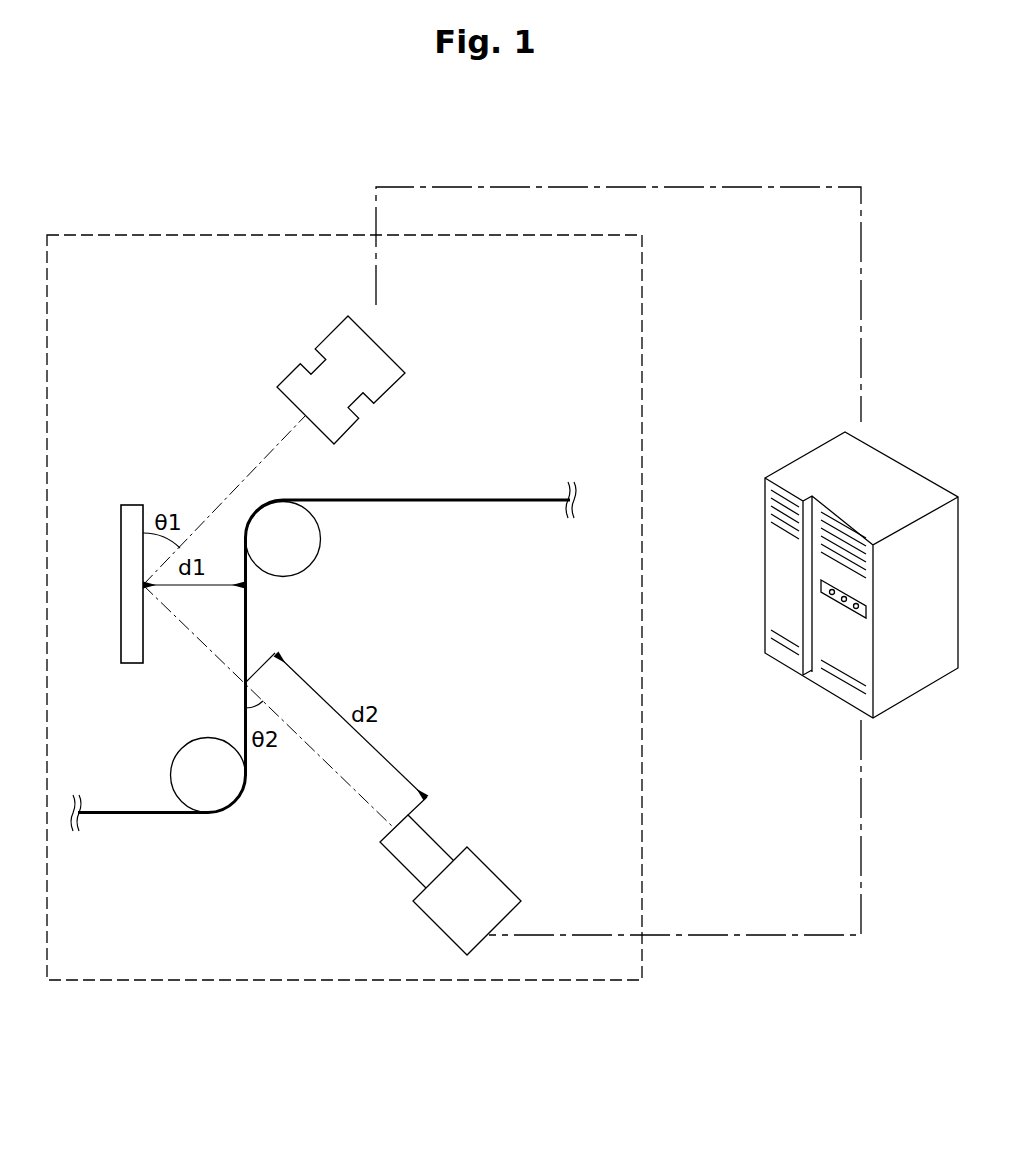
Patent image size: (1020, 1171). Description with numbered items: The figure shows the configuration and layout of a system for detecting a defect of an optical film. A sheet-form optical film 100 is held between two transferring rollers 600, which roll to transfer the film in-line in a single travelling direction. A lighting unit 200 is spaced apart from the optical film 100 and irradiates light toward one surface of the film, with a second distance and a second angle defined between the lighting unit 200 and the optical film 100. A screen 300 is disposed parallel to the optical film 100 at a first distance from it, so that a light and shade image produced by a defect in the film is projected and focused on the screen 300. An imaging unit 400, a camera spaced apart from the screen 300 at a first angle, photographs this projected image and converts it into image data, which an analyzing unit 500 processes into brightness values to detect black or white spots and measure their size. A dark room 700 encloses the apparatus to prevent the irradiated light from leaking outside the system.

The optical film 100 is at (466, 498).
The lighting unit 200 is at (494, 853).
The screen 300 is at (130, 496).
The imaging unit 400 is at (300, 353).
The analyzing unit 500 is at (792, 445).
The transferring rollers 600 is at (328, 558).
The dark room 700 is at (554, 238).